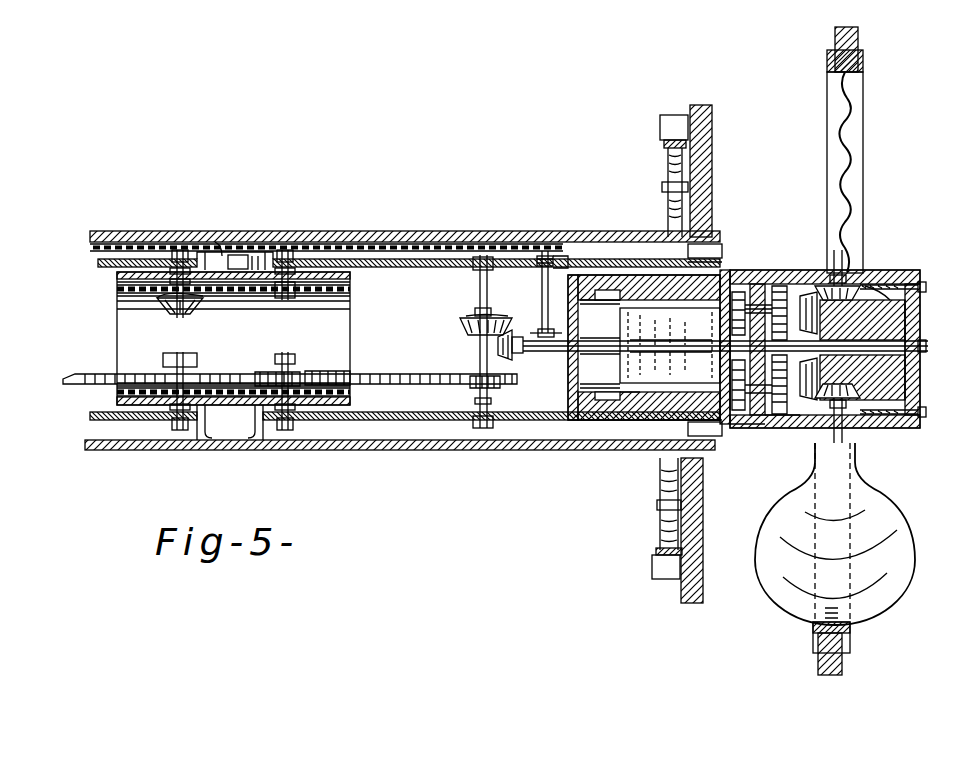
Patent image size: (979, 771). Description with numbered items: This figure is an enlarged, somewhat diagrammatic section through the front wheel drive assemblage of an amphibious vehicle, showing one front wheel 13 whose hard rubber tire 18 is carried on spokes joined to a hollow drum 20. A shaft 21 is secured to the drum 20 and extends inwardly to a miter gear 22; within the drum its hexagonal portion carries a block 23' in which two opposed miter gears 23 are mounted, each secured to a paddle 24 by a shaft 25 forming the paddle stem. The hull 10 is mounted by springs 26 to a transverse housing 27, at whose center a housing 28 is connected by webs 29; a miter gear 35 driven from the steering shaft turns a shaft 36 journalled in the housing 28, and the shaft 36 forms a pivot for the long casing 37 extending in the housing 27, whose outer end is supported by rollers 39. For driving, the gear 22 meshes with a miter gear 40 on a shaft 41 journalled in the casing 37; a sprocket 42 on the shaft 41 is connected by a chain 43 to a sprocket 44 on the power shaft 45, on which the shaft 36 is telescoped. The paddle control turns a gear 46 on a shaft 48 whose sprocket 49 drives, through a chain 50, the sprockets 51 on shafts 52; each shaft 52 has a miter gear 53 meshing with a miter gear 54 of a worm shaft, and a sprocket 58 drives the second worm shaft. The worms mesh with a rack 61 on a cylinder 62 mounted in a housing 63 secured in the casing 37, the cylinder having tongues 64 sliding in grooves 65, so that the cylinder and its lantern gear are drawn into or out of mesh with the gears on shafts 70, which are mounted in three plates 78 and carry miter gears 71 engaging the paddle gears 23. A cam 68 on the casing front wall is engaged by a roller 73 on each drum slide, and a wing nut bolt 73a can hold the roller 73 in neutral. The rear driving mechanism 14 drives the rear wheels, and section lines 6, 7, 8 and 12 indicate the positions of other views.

The section line 6- 6 is at (262, 335).
The flange 7 is at (712, 264).
The section line 8- 8 is at (732, 208).
The hull 10 is at (712, 132).
The section line 12- 12 is at (755, 262).
The front wheel 13 is at (826, 126).
The rear driving mechanism 14 is at (872, 78).
The hard rubber tire 18 is at (834, 36).
The hollow drum 20 is at (922, 295).
The shaft 21 is at (900, 348).
The miter gear 22 is at (497, 346).
The miter gear 23 is at (850, 347).
The block 23' is at (930, 357).
The paddle 24 is at (848, 152).
The shaft 25 is at (862, 285).
The spring 26 is at (668, 118).
The housing 27 is at (345, 238).
The housing 28 is at (262, 430).
The web 29 is at (262, 262).
The miter gear 35 is at (170, 312).
The shaft 36 is at (155, 300).
The casing 37 is at (455, 245).
The roller 39 is at (705, 250).
The miter gear 40 is at (465, 322).
The shaft 41 is at (487, 304).
The sprocket 42 is at (490, 388).
The chain 43 is at (80, 366).
The sprocket 44 is at (270, 374).
The shaft 45 is at (292, 370).
The gear 46 is at (232, 258).
The shaft 48 is at (238, 255).
The sprocket 49 is at (256, 262).
The chain 50 is at (412, 248).
The sprocket 51 is at (546, 250).
The shaft 52 is at (545, 294).
The miter gear 53 is at (600, 339).
The miter gear 54 is at (552, 338).
The sprocket 58 is at (560, 258).
The rack 61 is at (690, 345).
The cylinder 62 is at (620, 300).
The housing 63 is at (590, 410).
The tongue 64 is at (642, 412).
The groove 65 is at (605, 292).
The cam 68 is at (745, 436).
The shaft 70 is at (780, 288).
The miter gear 71 is at (807, 346).
The roller 73 is at (770, 436).
The wing nut bolt 73a is at (880, 285).
The plate 78 is at (757, 285).